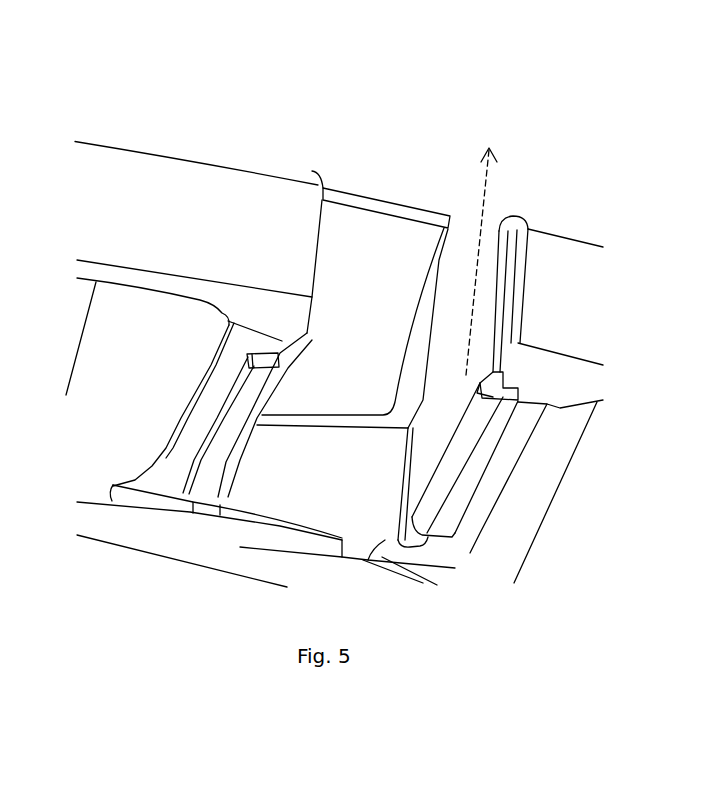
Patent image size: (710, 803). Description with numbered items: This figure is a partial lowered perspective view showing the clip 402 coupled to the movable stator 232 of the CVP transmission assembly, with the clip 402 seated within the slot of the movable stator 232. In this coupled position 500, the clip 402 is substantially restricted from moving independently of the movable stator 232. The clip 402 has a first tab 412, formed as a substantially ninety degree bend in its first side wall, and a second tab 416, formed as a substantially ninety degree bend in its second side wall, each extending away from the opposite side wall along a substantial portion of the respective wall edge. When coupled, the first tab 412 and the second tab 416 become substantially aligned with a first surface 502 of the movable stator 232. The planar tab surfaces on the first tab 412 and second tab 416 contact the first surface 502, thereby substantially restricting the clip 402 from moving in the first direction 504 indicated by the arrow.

The coupled position 500 is at (188, 92).
The movable stator 232 is at (262, 260).
The clip 402 is at (429, 192).
The first direction 504 is at (486, 203).
The first surface 502 is at (177, 463).
The second tab 416 is at (204, 478).
The first tab 412 is at (455, 502).